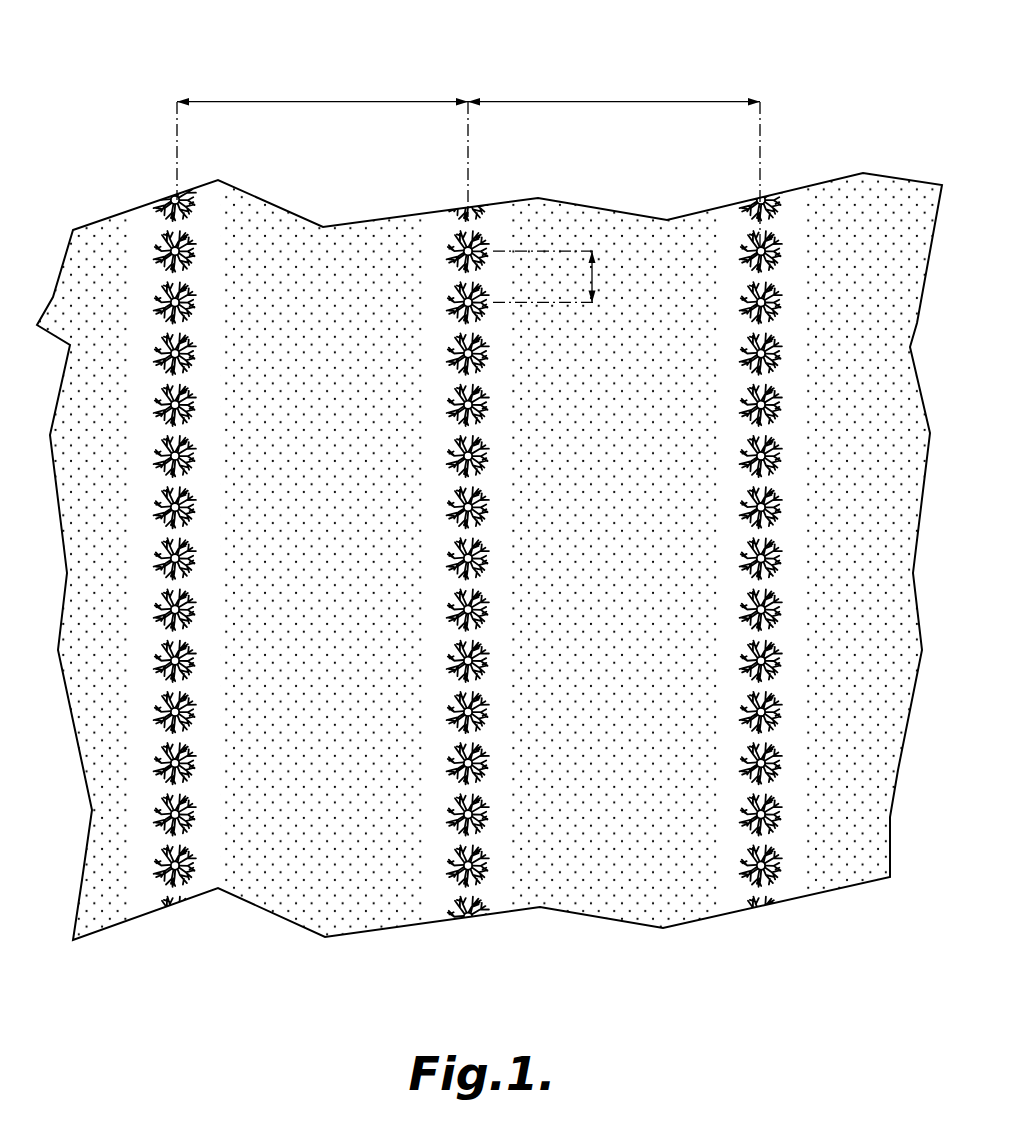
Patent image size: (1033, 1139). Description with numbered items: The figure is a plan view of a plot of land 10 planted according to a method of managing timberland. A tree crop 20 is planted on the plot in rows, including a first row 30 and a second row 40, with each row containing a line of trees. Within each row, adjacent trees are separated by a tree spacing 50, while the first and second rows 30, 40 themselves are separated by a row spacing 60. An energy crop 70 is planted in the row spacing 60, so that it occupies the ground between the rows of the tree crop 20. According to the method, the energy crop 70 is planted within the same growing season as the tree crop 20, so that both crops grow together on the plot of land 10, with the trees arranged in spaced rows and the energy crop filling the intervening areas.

The plot of land 10 is at (778, 70).
The tree crop 20 is at (147, 230).
The first row 30 is at (173, 924).
The second row 40 is at (470, 936).
The tree spacing 50 is at (593, 277).
The row spacing 60 is at (468, 162).
The energy crop 70 is at (328, 912).